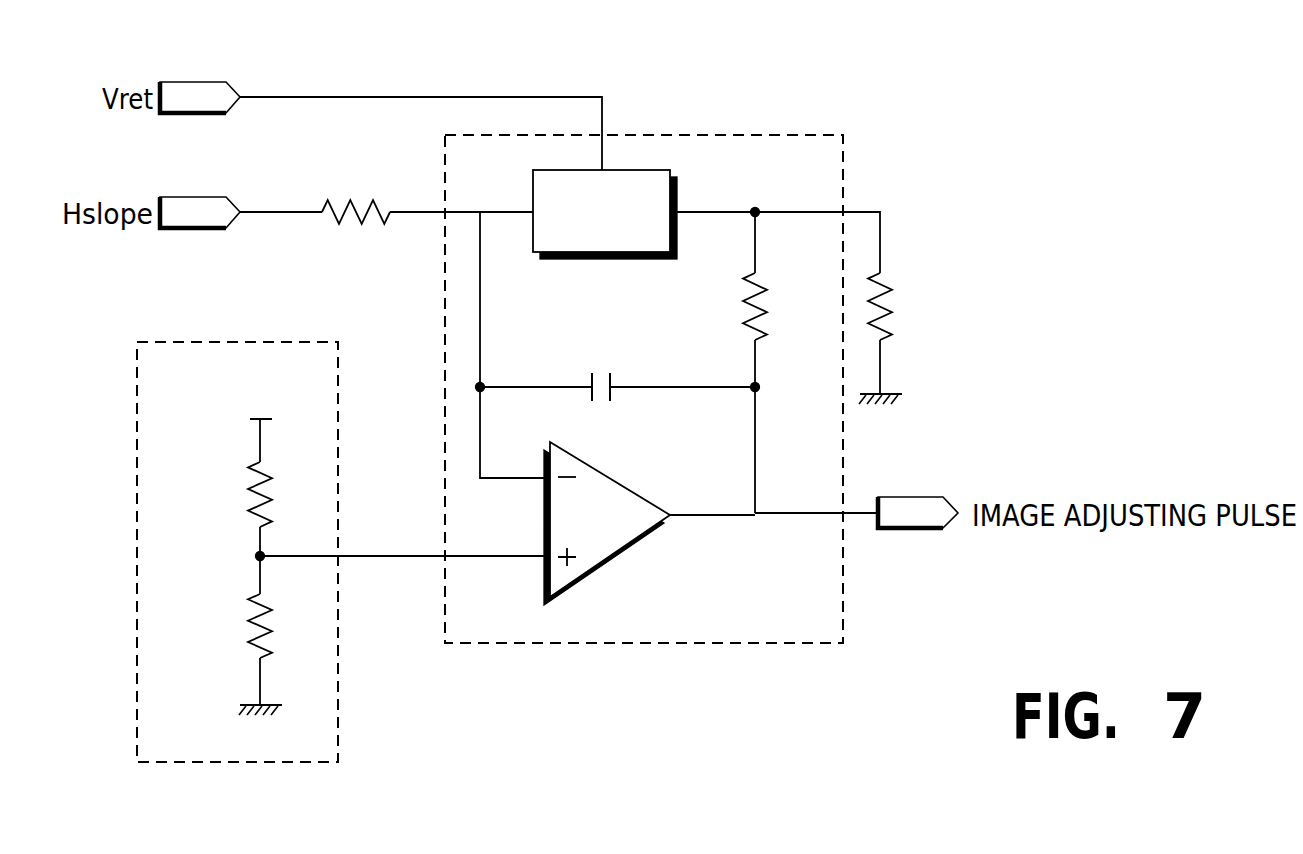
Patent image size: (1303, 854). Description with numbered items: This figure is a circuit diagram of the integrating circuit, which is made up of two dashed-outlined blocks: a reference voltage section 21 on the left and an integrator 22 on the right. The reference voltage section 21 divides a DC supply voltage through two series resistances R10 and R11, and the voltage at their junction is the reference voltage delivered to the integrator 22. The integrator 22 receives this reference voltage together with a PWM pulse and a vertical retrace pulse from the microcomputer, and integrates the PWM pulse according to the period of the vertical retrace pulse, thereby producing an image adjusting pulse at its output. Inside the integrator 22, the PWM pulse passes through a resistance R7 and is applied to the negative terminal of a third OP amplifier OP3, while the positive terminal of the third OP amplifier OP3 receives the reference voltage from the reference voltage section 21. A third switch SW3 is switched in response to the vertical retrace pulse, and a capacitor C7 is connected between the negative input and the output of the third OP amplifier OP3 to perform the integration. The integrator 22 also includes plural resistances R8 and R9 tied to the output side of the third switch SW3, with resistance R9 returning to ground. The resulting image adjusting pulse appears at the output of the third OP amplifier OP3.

The reference voltage section 21 is at (137, 470).
The integrator 22 is at (730, 135).
The resistance R7 is at (356, 197).
The resistance R8 is at (779, 306).
The resistance R9 is at (908, 306).
The resistance R10 is at (222, 494).
The resistance R11 is at (222, 626).
The third switch SW3 is at (605, 214).
The capacitor C7 is at (601, 369).
The third OP amplifier OP3 is at (607, 523).